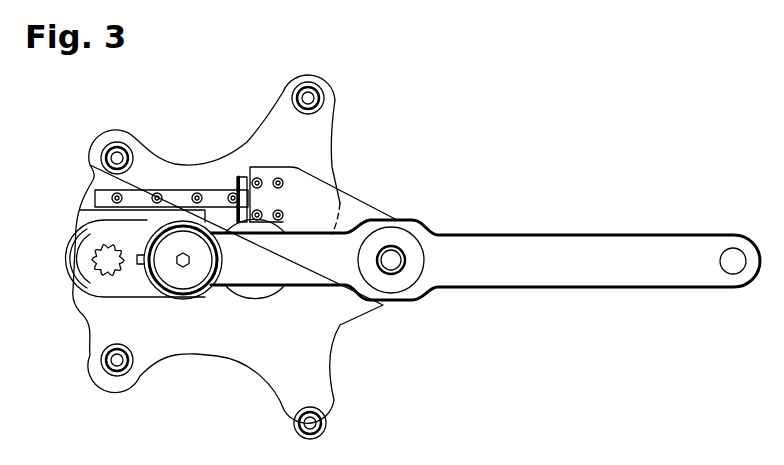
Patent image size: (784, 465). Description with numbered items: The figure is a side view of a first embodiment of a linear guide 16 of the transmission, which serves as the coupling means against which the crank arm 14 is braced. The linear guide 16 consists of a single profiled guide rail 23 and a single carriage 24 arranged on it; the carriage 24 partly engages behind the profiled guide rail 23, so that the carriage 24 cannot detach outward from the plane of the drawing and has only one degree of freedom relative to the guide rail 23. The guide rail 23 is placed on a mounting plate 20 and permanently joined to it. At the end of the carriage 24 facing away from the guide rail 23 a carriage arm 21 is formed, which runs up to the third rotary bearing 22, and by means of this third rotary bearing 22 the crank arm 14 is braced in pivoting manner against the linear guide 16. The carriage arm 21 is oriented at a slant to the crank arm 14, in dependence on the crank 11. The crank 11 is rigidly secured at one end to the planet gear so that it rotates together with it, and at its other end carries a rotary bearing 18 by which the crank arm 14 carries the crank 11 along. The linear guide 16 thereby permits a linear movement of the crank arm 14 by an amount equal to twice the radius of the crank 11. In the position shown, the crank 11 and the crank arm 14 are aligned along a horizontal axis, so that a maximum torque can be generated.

The crank 11 is at (137, 292).
The crank arm 14 is at (552, 260).
The linear guide 16 is at (112, 318).
The rotary bearing 18 is at (205, 295).
The mounting plate 20 is at (300, 366).
The carriage arm 21 is at (337, 210).
The third rotary bearing 22 is at (390, 262).
The guide rail 23 is at (177, 200).
The carriage 24 is at (242, 177).